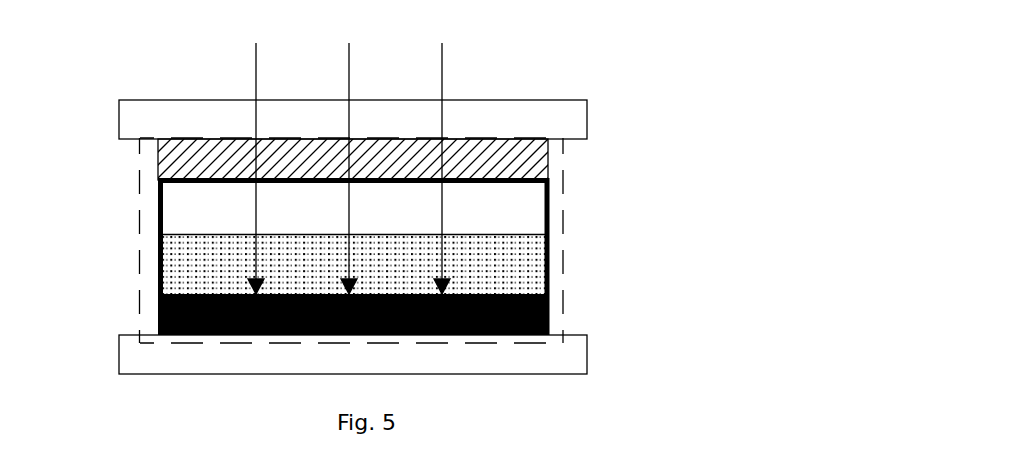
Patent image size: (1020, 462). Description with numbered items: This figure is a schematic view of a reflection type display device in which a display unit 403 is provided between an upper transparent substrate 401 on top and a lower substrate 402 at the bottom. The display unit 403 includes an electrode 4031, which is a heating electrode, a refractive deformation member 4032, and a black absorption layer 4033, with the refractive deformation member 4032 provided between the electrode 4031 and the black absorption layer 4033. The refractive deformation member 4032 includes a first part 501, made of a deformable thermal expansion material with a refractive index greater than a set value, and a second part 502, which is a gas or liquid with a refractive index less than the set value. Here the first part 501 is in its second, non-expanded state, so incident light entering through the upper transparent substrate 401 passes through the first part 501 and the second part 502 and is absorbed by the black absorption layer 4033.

The upper transparent substrate 401 is at (383, 89).
The lower substrate 402 is at (392, 327).
The display unit 403 is at (362, 200).
The electrode 4031 is at (352, 122).
The refractive deformation member 4032 is at (119, 246).
The black absorption layer 4033 is at (394, 289).
The first part 501 is at (404, 229).
The second part 502 is at (404, 232).